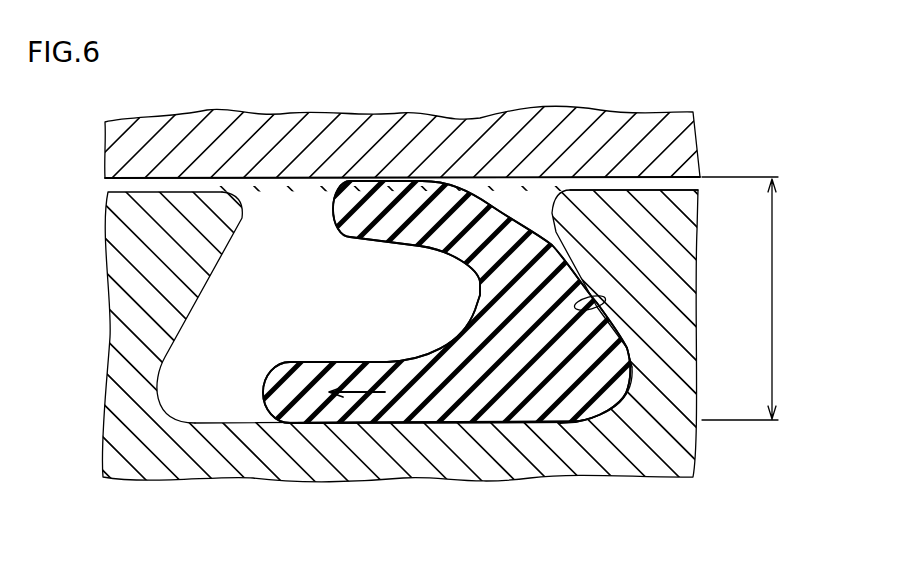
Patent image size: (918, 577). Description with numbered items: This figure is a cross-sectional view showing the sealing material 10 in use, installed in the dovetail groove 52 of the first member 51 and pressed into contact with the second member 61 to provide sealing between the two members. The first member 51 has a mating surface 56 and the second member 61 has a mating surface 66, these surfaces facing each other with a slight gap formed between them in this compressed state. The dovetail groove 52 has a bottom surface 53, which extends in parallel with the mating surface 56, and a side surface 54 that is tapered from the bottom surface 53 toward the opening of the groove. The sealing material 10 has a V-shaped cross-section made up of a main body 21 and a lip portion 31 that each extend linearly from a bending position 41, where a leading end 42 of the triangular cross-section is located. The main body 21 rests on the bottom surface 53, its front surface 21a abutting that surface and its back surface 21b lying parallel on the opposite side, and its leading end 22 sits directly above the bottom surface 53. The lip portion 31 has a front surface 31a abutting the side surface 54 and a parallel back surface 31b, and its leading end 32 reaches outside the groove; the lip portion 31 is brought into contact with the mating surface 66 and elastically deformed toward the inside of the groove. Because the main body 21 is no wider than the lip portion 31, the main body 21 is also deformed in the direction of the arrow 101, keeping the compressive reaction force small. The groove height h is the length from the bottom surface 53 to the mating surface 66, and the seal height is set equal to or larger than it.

The sealing material 10 is at (542, 197).
The main body 21 is at (297, 408).
The front surface 21a is at (407, 362).
The back surface 21b is at (410, 360).
The leading end 22 is at (262, 390).
The lip portion 31 is at (393, 207).
The front surface 31a is at (444, 217).
The back surface 31b is at (335, 213).
The leading end 32 is at (390, 243).
The bending position 41 is at (600, 380).
The leading end 42 is at (632, 400).
The first member 51 is at (128, 251).
The dovetail groove 52 is at (255, 247).
The bottom surface 53 is at (256, 426).
The side surface 54 is at (603, 295).
The mating surface 56 is at (675, 181).
The second member 61 is at (129, 158).
The mating surface 66 is at (655, 192).
The arrow 101 is at (362, 405).
The groove height h is at (775, 298).